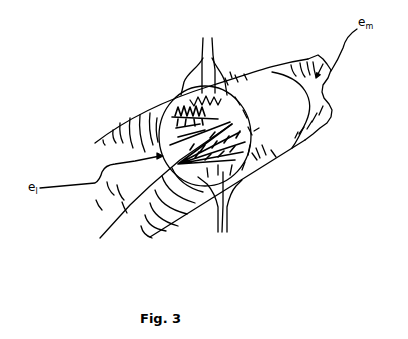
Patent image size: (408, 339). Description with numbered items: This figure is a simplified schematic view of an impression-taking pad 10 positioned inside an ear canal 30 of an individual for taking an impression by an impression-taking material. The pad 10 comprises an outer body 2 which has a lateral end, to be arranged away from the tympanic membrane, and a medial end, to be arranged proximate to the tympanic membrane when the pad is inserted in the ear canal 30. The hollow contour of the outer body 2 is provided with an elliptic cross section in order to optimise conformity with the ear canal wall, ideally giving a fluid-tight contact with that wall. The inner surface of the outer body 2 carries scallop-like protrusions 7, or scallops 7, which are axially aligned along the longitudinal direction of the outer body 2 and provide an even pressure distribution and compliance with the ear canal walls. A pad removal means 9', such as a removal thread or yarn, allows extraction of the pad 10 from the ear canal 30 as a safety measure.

The outer body 2 is at (262, 85).
The scallop-like protrusions 7 is at (211, 137).
The pad removal means 9' is at (160, 181).
The impression-taking pad 10 is at (290, 156).
The ear canal 30 is at (140, 115).